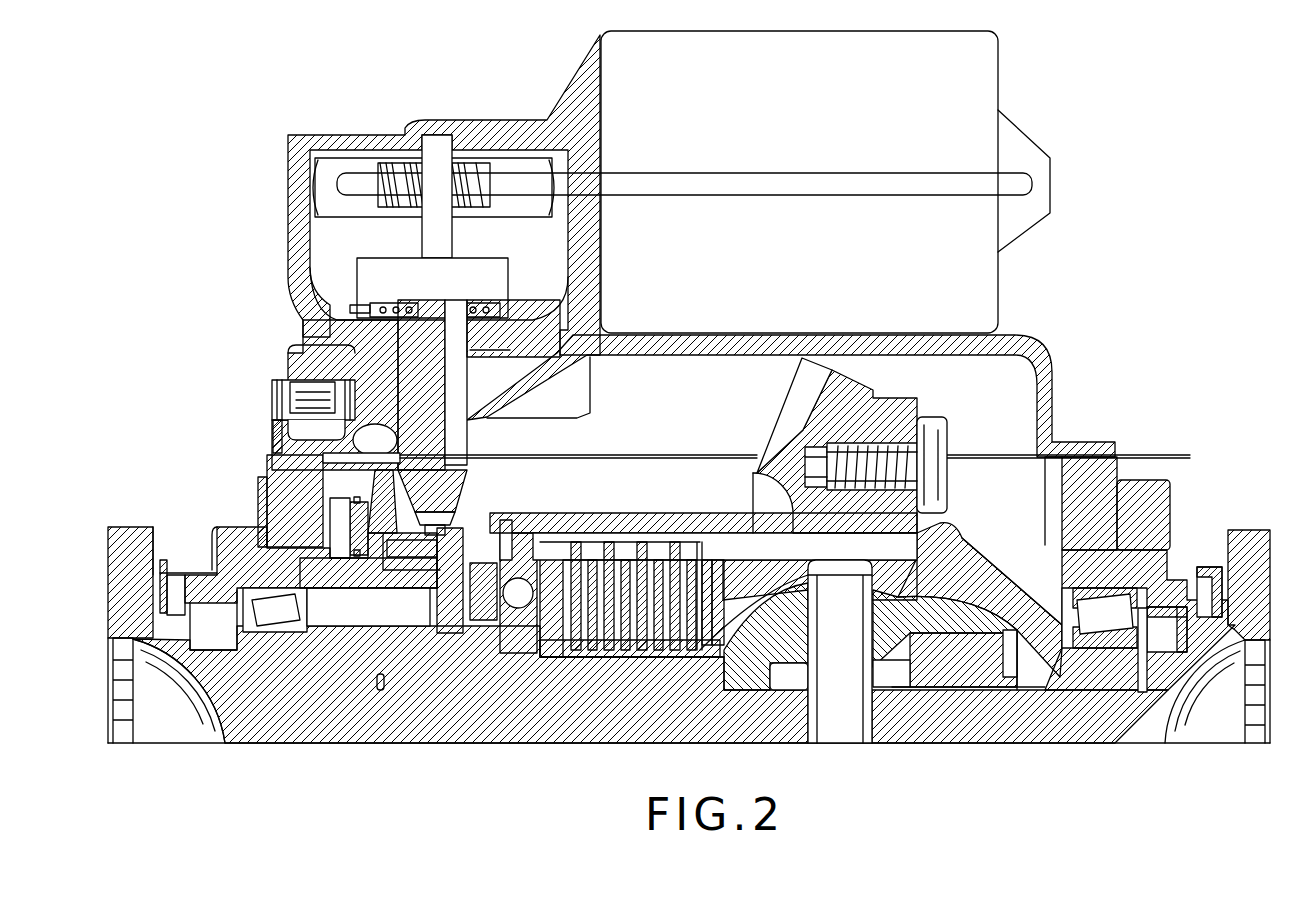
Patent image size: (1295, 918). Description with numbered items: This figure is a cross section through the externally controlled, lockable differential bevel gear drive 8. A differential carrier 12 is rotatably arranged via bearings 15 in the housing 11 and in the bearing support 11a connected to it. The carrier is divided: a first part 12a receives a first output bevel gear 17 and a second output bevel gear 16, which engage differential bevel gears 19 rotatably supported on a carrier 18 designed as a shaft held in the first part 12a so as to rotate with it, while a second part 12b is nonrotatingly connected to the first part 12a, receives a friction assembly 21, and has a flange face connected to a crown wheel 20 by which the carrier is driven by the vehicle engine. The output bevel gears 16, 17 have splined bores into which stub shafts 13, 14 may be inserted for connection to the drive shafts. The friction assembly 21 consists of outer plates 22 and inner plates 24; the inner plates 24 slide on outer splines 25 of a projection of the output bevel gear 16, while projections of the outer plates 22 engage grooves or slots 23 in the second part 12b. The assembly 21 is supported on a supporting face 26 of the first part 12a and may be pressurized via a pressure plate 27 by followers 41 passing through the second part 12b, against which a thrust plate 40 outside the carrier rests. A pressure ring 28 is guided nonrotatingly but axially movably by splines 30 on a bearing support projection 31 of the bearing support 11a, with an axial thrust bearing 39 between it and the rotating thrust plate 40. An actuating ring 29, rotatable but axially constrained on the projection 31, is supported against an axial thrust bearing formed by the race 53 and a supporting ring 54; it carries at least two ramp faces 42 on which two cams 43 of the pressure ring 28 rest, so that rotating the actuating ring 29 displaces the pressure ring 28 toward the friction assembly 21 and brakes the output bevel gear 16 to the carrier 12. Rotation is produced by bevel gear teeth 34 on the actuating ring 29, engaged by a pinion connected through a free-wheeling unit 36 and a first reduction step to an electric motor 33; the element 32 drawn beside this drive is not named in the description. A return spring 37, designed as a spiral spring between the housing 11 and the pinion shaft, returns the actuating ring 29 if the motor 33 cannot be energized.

The lockable differential bevel gear drive 8 is at (1087, 418).
The housing 11 is at (340, 483).
The bearing support 11a is at (237, 527).
The differential carrier 12 is at (996, 558).
The first part of differential carrier 12a is at (1000, 568).
The second part of differential carrier 12b is at (540, 600).
The stub shaft 13 is at (1250, 550).
The stub shaft 14 is at (130, 618).
The bearings 15 is at (290, 623).
The second output bevel gear 16 is at (718, 610).
The first output bevel gear 17 is at (967, 670).
The carrier 18 is at (845, 720).
The differential bevel gears 19 is at (795, 628).
The crown wheel 20 is at (793, 400).
The friction assembly 21 is at (612, 583).
The outer plates 22 is at (670, 540).
The grooves or slots 23 is at (753, 547).
The inner plates 24 is at (617, 583).
The outer splines 25 is at (697, 657).
The supporting face 26 is at (692, 560).
The pressure plate 27 is at (553, 547).
The pressure ring 28 is at (453, 597).
The actuating ring 29 is at (383, 498).
The splines 30 is at (412, 565).
The bearing support projection 31 is at (360, 578).
The worm gear 32 is at (405, 125).
The motor 33 is at (990, 100).
The bevel gear teeth 34 is at (283, 483).
The free-wheeling unit 36 is at (375, 268).
The return spring 37 is at (355, 305).
The axial thrust bearing 39 is at (470, 582).
The thrust plate 40 is at (505, 570).
The followers 41 is at (528, 590).
The ramp faces 42 is at (433, 518).
The cams 43 is at (482, 497).
The race 53 is at (355, 513).
The supporting ring 54 is at (337, 525).